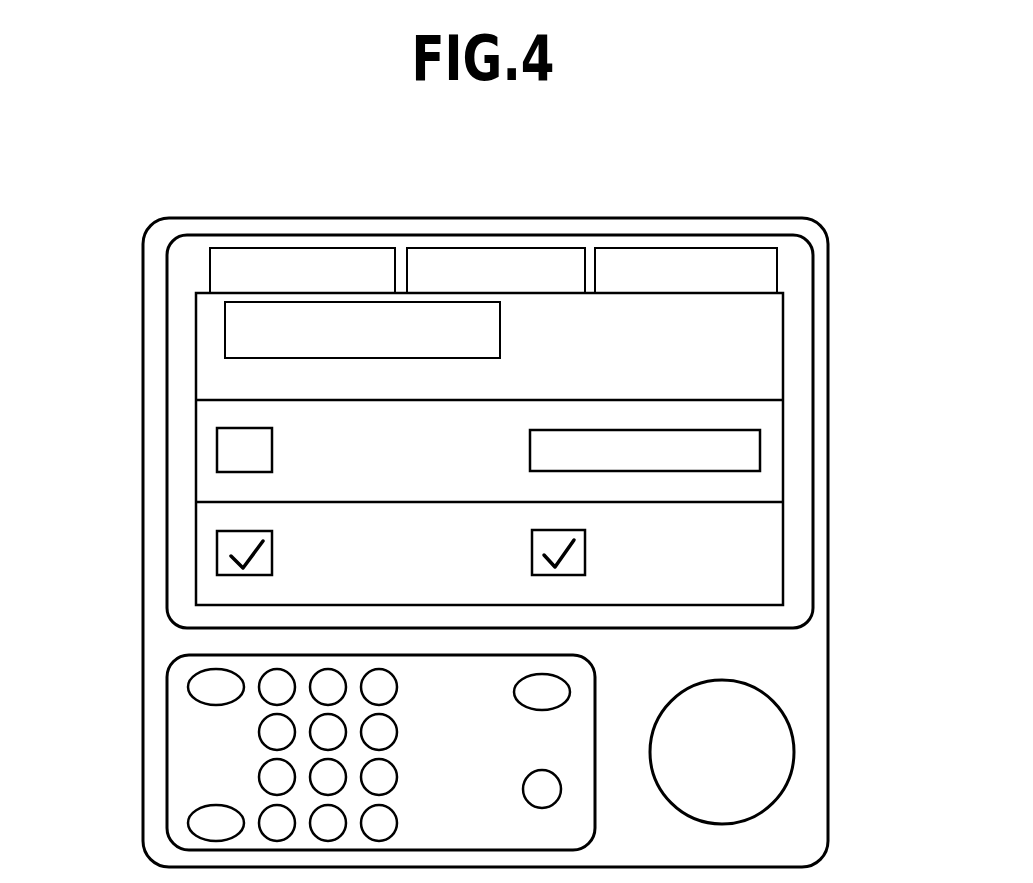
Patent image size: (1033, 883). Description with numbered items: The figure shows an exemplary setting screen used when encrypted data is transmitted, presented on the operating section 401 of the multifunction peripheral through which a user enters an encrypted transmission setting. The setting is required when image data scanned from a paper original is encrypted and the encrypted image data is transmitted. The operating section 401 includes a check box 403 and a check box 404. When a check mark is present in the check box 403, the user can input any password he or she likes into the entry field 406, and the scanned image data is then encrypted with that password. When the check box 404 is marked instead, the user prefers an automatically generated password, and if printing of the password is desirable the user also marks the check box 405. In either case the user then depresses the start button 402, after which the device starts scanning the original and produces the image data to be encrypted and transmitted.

The operating section 401 is at (627, 218).
The start button 402 is at (794, 738).
The check box 403 is at (230, 450).
The check box 404 is at (230, 560).
The check box 405 is at (577, 533).
The entry field 406 is at (745, 450).